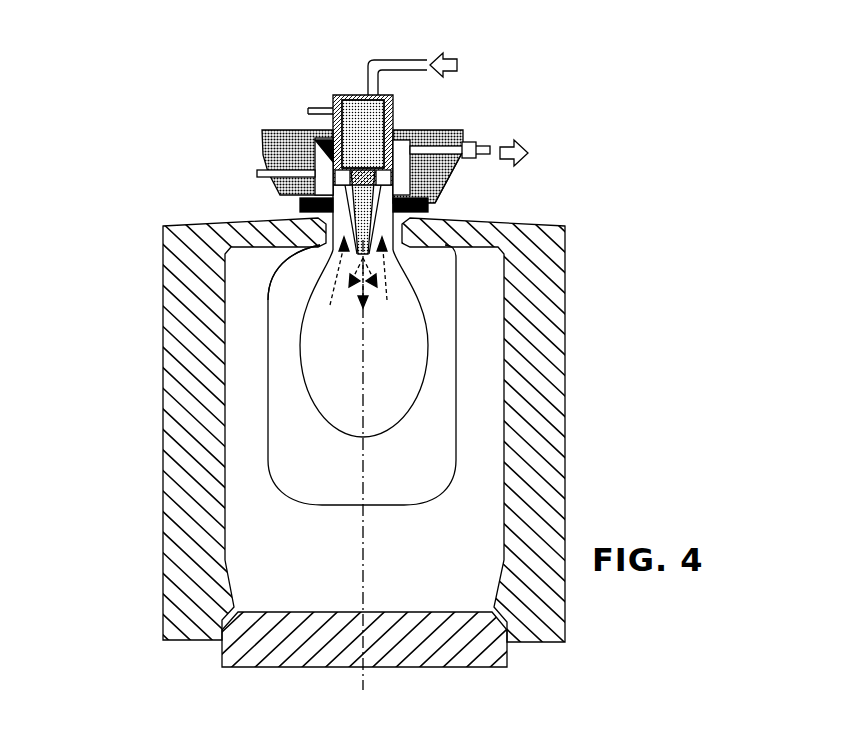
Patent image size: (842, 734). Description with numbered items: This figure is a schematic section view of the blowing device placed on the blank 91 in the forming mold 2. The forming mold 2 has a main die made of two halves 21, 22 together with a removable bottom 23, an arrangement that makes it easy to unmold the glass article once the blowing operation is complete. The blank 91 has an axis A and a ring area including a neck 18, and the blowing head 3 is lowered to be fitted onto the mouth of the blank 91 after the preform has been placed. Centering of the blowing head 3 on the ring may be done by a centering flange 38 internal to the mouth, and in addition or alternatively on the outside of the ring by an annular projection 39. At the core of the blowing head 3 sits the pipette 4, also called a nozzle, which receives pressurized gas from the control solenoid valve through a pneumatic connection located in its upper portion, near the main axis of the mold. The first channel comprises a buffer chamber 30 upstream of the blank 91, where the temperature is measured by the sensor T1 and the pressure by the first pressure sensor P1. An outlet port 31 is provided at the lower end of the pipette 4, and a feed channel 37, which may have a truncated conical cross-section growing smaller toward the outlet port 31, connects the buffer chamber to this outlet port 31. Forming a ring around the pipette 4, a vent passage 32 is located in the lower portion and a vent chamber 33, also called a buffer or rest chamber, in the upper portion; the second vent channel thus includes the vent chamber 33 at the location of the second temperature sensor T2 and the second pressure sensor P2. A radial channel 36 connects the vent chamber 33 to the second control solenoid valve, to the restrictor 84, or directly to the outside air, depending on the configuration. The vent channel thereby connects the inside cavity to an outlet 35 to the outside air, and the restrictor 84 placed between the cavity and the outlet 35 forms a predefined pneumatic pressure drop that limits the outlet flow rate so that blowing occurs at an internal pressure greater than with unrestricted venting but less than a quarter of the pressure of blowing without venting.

The forming mold 2 is at (421, 367).
The blowing head 3 is at (412, 142).
The pipette 4 is at (262, 140).
The neck 18 is at (290, 237).
The mold half 21 is at (185, 428).
The mold half 22 is at (528, 352).
The removable bottom 23 is at (285, 632).
The buffer chamber 30 is at (357, 100).
The outlet port 31 is at (329, 283).
The vent passage 32 is at (393, 280).
The vent chamber 33 is at (401, 150).
The outlet 35 is at (488, 152).
The radial channel 36 is at (452, 135).
The feed channel 37 is at (300, 200).
The centering flange 38 is at (452, 186).
The annular projection 39 is at (435, 204).
The restrictor 84 is at (472, 144).
The blank 91 is at (412, 478).
The axis A is at (375, 465).
The first temperature sensor T1 is at (334, 94).
The second temperature sensor T2 is at (283, 130).
The first pressure sensor P1 is at (308, 110).
The second pressure sensor P2 is at (257, 173).